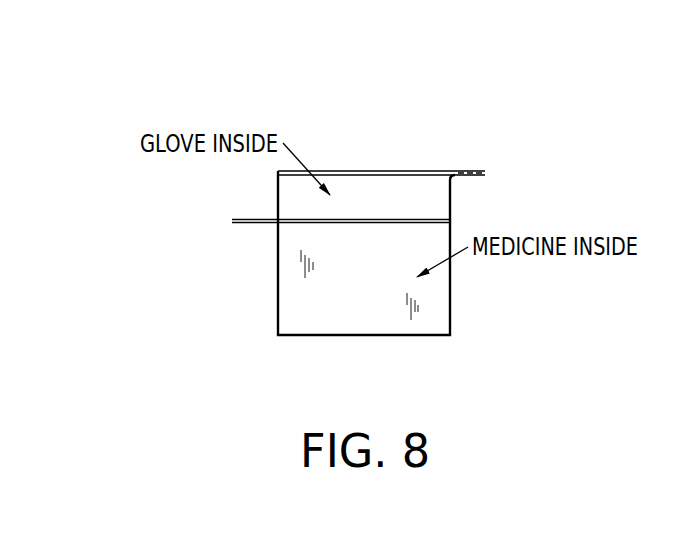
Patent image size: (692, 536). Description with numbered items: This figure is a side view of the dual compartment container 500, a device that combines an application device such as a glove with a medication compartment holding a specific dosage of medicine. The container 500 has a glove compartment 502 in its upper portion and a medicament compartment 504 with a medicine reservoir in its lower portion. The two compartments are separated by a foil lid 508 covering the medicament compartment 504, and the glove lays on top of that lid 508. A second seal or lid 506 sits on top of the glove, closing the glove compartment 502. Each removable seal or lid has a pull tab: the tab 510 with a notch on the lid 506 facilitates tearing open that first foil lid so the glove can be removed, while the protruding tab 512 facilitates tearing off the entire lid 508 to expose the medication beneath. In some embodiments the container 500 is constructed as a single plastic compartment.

The dual compartment container 500 is at (362, 210).
The glove compartment 502 is at (427, 199).
The medicament compartment 504 is at (323, 318).
The seal or lid 506 is at (412, 171).
The foil lid 508 is at (328, 226).
The pull tab 510 is at (492, 173).
The pull tab 512 is at (222, 222).